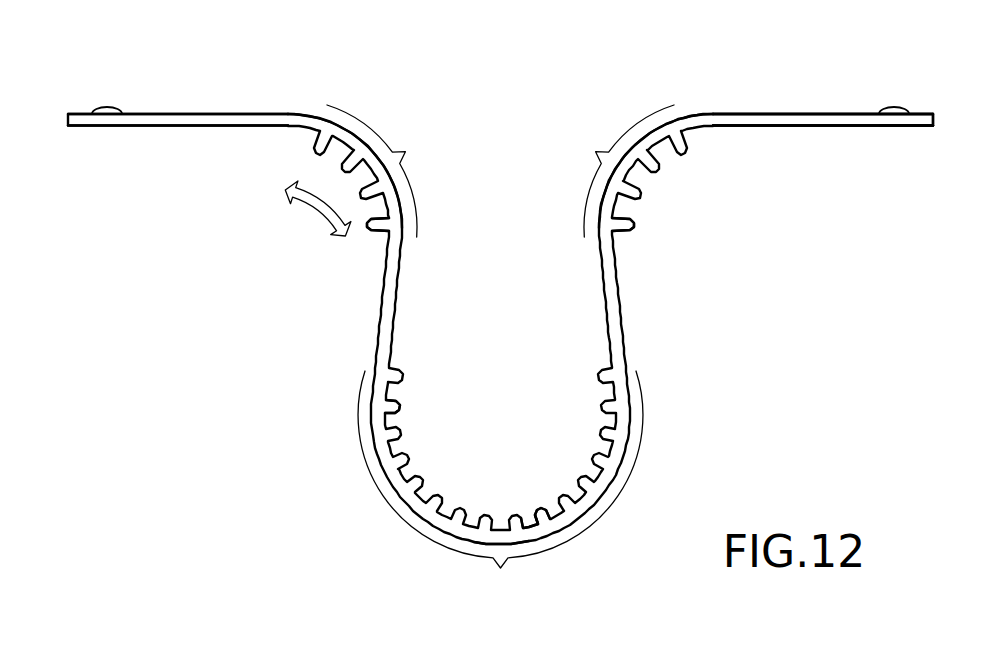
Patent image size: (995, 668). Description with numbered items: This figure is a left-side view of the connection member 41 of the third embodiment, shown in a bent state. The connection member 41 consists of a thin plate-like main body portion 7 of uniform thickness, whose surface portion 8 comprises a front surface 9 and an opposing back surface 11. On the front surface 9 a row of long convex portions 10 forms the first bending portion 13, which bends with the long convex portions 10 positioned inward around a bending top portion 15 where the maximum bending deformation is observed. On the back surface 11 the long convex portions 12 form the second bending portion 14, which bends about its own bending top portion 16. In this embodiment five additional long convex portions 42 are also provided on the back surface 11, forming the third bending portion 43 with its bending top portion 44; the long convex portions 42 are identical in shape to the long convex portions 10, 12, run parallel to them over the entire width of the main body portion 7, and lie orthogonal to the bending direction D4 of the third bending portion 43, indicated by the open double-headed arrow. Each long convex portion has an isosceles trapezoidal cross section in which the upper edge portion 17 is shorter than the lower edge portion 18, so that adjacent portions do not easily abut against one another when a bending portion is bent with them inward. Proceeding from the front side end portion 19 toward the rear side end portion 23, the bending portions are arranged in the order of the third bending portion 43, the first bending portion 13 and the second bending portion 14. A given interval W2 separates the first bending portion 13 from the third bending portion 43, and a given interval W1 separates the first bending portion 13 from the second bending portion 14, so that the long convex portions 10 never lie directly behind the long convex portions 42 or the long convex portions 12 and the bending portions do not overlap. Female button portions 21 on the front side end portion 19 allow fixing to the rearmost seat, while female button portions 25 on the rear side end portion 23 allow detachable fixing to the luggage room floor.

The main body portion 7 is at (757, 113).
The surface portion 8 is at (817, 113).
The front surface 9 is at (817, 113).
The long convex portion 10 is at (401, 405).
The back surface 11 is at (808, 126).
The long convex portion 12 is at (632, 232).
The first bending portion 13 is at (500, 490).
The second bending portion 14 is at (615, 171).
The bending top portion 15 is at (502, 541).
The bending top portion 16 is at (617, 167).
The upper edge portion 17 is at (540, 507).
The lower edge portion 18 is at (547, 522).
The front side end portion 19 is at (100, 126).
The female button portion 21 is at (105, 110).
The rear side end portion 23 is at (900, 126).
The female button portion 25 is at (893, 107).
The connection member 41 is at (240, 112).
The long convex portion 42 is at (389, 237).
The third bending portion 43 is at (388, 171).
The bending top portion 44 is at (385, 168).
The interval W1 is at (595, 243).
The interval W2 is at (422, 243).
The bending direction D4 is at (330, 212).